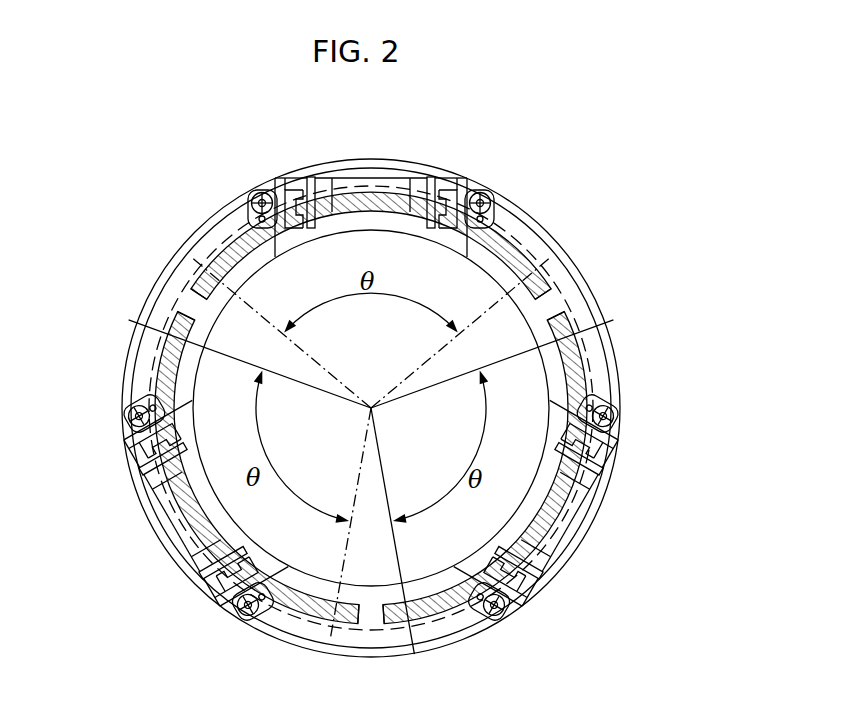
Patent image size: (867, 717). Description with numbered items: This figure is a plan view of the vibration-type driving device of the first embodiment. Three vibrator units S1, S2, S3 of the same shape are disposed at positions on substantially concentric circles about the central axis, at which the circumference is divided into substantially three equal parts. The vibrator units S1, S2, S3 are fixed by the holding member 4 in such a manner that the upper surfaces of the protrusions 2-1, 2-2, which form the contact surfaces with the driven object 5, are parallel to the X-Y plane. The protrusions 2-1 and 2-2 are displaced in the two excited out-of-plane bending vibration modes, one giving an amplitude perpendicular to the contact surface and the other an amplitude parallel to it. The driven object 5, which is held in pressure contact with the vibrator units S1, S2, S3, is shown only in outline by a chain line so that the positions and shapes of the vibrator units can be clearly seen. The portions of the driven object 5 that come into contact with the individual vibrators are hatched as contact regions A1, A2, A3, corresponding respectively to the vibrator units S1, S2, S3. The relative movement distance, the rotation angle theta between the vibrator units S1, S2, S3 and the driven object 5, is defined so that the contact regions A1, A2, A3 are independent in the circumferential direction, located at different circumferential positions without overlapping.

The protrusion 2-1 is at (340, 178).
The protrusion 2-2 is at (420, 178).
The holding member 4 is at (602, 358).
The driven object 5 is at (565, 288).
The vibrator unit S1 is at (300, 178).
The vibrator unit S2 is at (605, 470).
The vibrator unit S3 is at (138, 452).
The contact region A1 is at (513, 228).
The contact region A2 is at (452, 613).
The contact region A3 is at (152, 382).